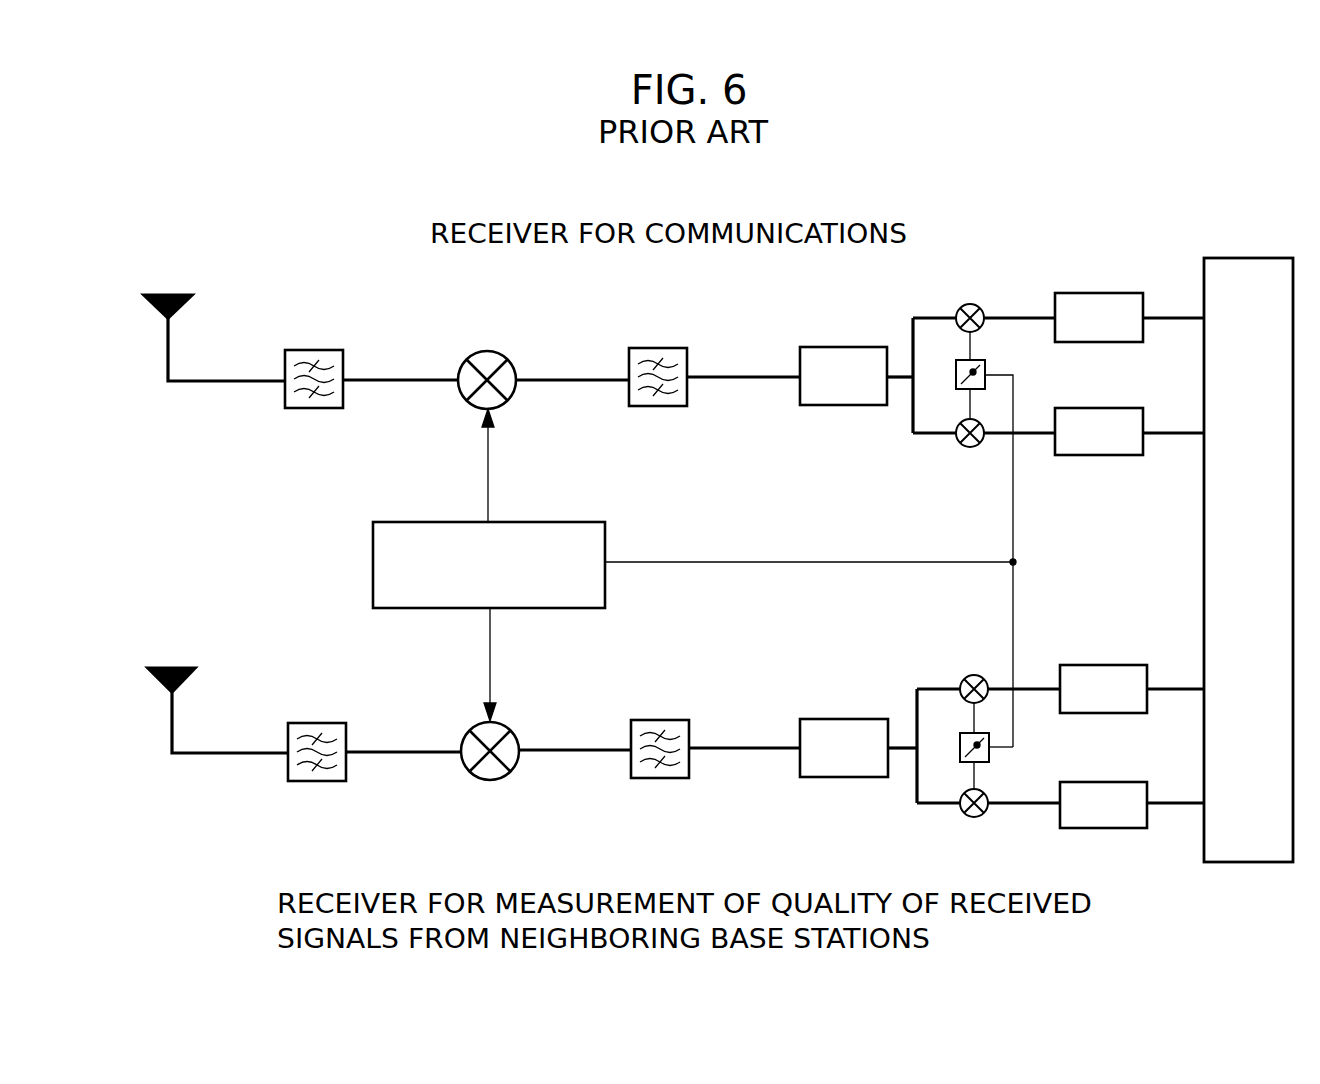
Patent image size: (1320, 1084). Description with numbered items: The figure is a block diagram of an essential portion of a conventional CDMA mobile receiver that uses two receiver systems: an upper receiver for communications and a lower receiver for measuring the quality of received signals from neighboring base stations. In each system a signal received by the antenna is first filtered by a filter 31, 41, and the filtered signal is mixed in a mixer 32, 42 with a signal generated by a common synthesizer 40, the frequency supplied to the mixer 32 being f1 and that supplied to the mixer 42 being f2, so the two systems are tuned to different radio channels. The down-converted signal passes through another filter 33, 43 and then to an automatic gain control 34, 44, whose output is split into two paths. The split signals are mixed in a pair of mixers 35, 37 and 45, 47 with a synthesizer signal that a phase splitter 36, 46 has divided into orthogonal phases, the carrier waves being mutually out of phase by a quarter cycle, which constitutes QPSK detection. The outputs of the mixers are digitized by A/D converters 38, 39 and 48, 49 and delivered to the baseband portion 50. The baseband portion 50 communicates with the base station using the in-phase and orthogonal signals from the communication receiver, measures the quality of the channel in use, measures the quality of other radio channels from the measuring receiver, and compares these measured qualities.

The filter 31 is at (314, 350).
The mixer 32 is at (488, 350).
The filter 33 is at (656, 348).
The automatic gain control 34 is at (843, 347).
The mixer 35 is at (967, 304).
The phase splitter 36 is at (998, 358).
The mixer 37 is at (963, 447).
The A/D converter 38 is at (1100, 293).
The A/D converter 39 is at (1102, 408).
The synthesizer 40 is at (425, 522).
The filter 41 is at (317, 723).
The mixer 42 is at (478, 730).
The filter 43 is at (659, 720).
The automatic gain control 44 is at (844, 719).
The mixer 45 is at (969, 675).
The phase splitter 46 is at (959, 746).
The mixer 47 is at (966, 816).
The A/D converter 48 is at (1105, 665).
The A/D converter 49 is at (1108, 782).
The baseband portion 50 is at (1245, 258).